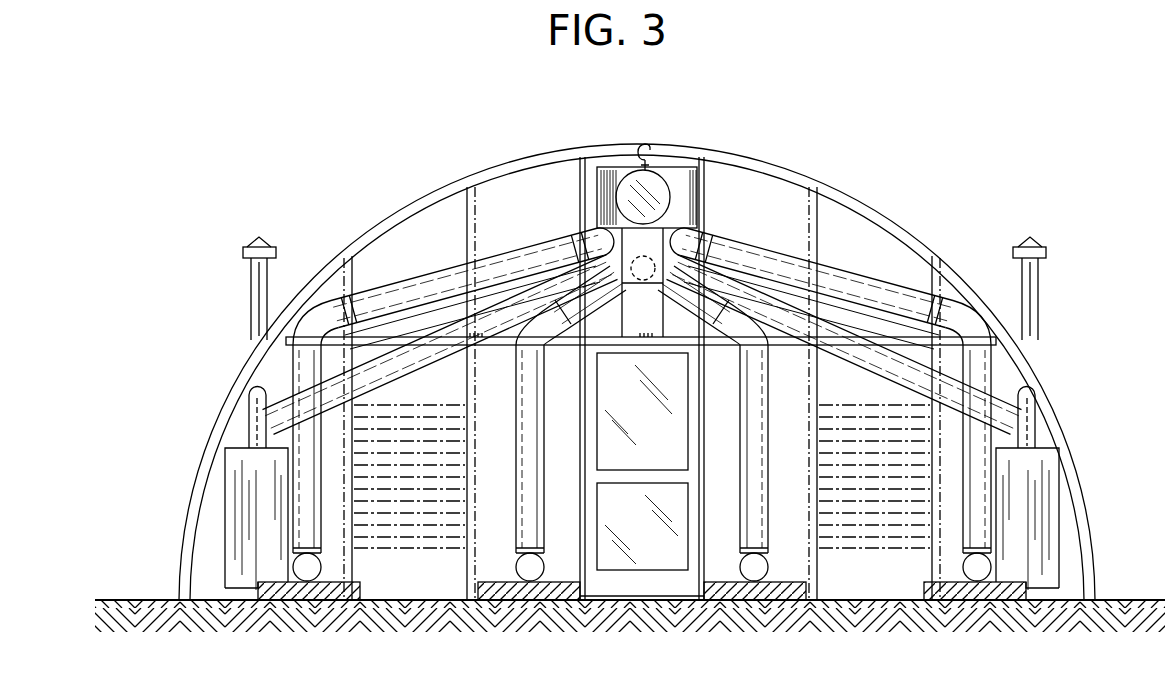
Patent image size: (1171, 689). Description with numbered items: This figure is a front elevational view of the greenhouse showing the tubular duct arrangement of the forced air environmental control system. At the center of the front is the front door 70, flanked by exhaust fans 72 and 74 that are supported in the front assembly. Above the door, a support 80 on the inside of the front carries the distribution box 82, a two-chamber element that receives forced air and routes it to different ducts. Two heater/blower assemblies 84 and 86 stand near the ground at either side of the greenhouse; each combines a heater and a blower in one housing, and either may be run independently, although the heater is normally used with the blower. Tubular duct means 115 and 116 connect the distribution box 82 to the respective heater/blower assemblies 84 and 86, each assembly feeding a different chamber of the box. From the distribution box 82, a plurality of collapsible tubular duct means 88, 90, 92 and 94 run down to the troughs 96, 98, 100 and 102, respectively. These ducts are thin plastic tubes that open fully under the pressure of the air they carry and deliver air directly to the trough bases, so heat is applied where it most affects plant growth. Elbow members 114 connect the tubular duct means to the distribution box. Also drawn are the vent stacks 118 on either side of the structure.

The front door 70 is at (676, 552).
The exhaust fan 72 is at (420, 459).
The exhaust fan 74 is at (880, 479).
The support 80 is at (640, 281).
The distribution box 82 is at (615, 192).
The heater/blower assembly 84 is at (1045, 500).
The heater/blower assembly 86 is at (274, 572).
The collapsible tubular duct means 88 is at (300, 465).
The collapsible tubular duct means 90 is at (520, 490).
The collapsible tubular duct means 92 is at (766, 392).
The collapsible tubular duct means 94 is at (965, 430).
The trough 96 is at (360, 590).
The trough 98 is at (490, 592).
The trough 100 is at (815, 592).
The trough 102 is at (925, 585).
The elbow member 114 is at (328, 298).
The tubular duct means 115 is at (862, 318).
The tubular duct means 116 is at (402, 365).
The vent stack 118 is at (248, 297).